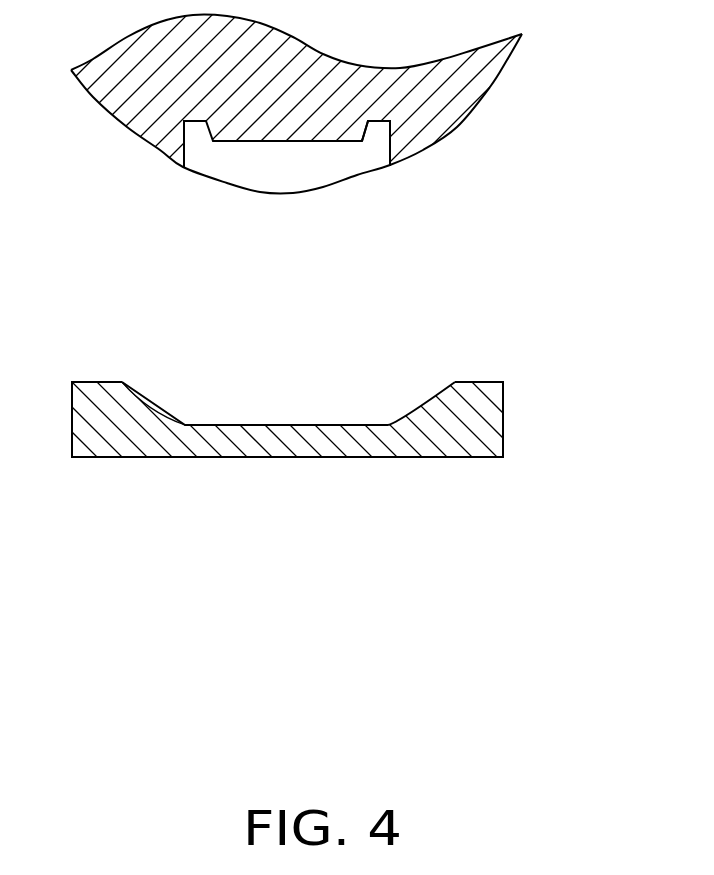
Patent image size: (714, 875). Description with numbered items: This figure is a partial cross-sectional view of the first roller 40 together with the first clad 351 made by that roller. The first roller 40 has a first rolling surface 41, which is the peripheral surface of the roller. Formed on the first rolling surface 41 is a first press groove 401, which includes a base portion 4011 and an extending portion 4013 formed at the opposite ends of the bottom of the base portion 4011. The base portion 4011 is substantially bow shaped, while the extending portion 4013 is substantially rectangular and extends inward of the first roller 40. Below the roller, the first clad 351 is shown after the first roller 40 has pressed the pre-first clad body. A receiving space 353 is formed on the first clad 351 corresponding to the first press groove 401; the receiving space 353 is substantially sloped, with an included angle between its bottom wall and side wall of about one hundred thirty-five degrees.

The first roller 40 is at (283, 142).
The first rolling surface 41 is at (437, 147).
The first press groove 401 is at (298, 198).
The base portion 4011 is at (288, 152).
The extending portion 4013 is at (377, 128).
The first clad 351 is at (296, 392).
The receiving space 353 is at (405, 402).